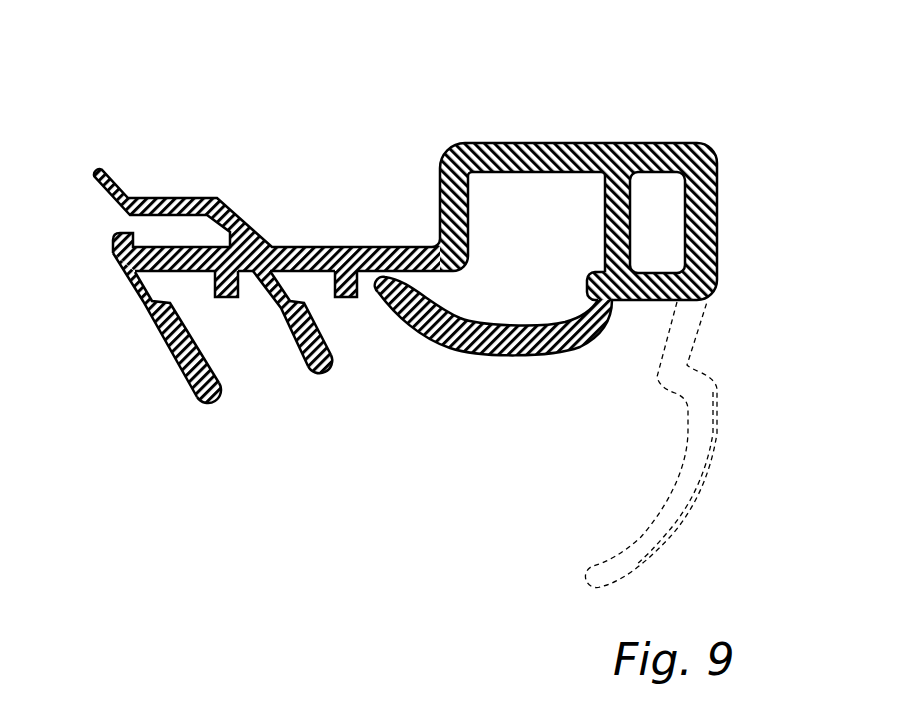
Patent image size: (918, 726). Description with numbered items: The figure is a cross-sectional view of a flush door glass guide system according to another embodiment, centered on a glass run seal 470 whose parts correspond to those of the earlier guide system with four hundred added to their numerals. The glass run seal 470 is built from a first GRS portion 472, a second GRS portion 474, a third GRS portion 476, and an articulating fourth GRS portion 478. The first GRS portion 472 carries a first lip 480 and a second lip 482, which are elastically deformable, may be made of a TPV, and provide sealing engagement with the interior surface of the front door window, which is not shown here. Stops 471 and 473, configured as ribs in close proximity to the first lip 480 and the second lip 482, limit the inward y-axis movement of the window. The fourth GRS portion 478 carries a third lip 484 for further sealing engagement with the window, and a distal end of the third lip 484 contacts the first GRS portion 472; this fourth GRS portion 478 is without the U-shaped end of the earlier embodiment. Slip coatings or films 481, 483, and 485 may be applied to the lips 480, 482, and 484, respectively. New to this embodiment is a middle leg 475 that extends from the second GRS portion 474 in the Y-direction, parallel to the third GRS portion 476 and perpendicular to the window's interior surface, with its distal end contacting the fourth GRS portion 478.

The glass run seal 470 is at (345, 99).
The stop 471 is at (228, 298).
The first GRS portion 472 is at (302, 246).
The stop 473 is at (347, 298).
The second GRS portion 474 is at (552, 145).
The middle leg 475 is at (608, 219).
The third GRS portion 476 is at (702, 218).
The fourth GRS portion 478 is at (632, 302).
The first lip 480 is at (217, 368).
The slip coating or film 481 is at (182, 378).
The second lip 482 is at (330, 337).
The slip coating or film 483 is at (303, 363).
The third lip 484 is at (495, 326).
The slip coating or film 485 is at (518, 356).